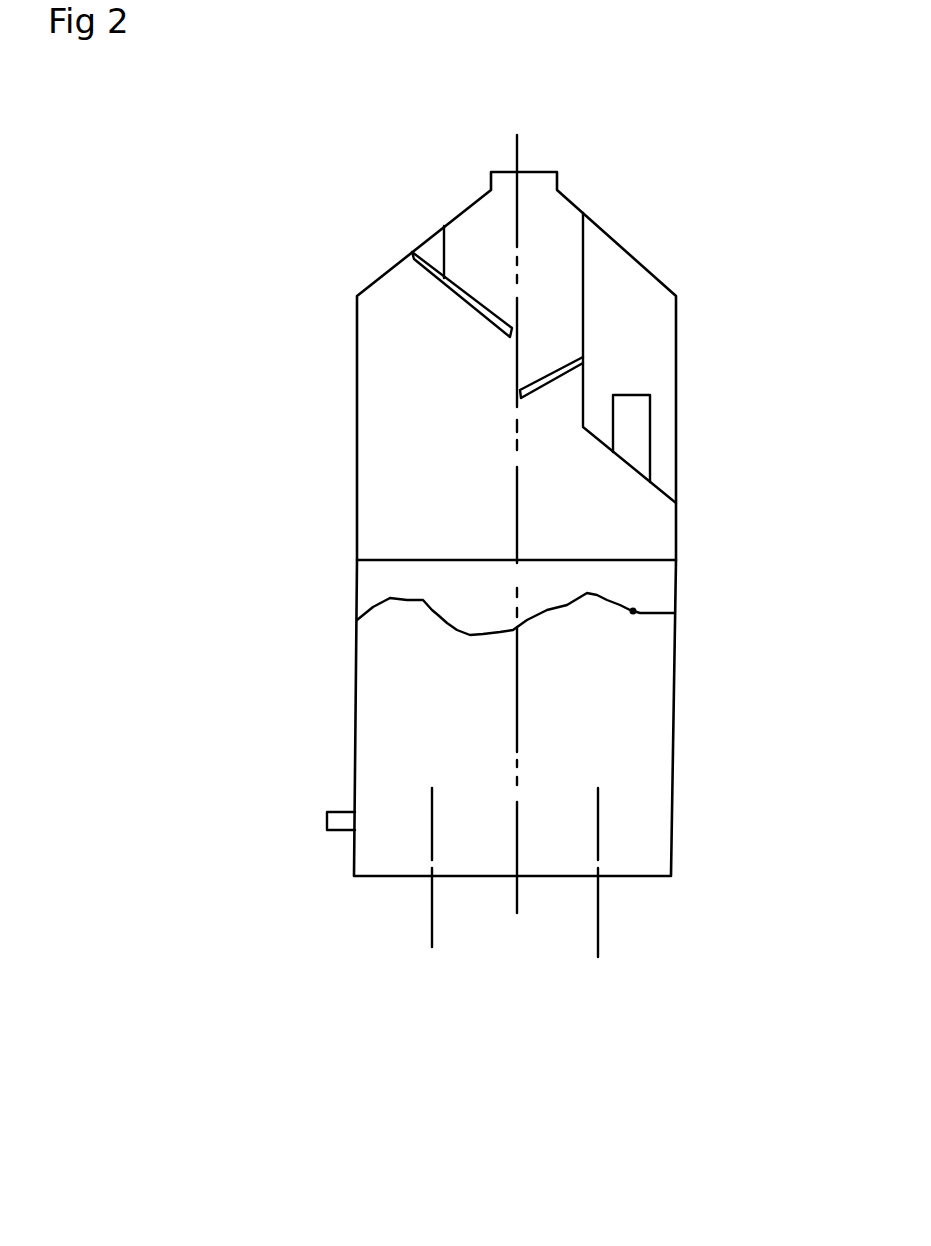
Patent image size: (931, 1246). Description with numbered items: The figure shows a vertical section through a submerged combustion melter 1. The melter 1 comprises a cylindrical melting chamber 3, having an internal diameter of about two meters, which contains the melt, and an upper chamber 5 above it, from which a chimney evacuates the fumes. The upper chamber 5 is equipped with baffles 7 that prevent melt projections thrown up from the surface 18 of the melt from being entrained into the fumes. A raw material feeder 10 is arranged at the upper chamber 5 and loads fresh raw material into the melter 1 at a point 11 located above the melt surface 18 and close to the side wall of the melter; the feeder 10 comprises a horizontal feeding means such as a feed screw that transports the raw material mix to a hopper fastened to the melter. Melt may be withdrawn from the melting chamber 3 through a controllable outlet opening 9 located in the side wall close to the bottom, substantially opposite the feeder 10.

The melter 1 is at (224, 907).
The melting chamber 3 is at (357, 603).
The upper chamber 5 is at (357, 362).
The baffles 7 is at (444, 226).
The controllable outlet opening 9 is at (328, 812).
The raw material feeder 10 is at (650, 445).
The feeding point 11 is at (633, 612).
The melt surface 18 is at (645, 614).